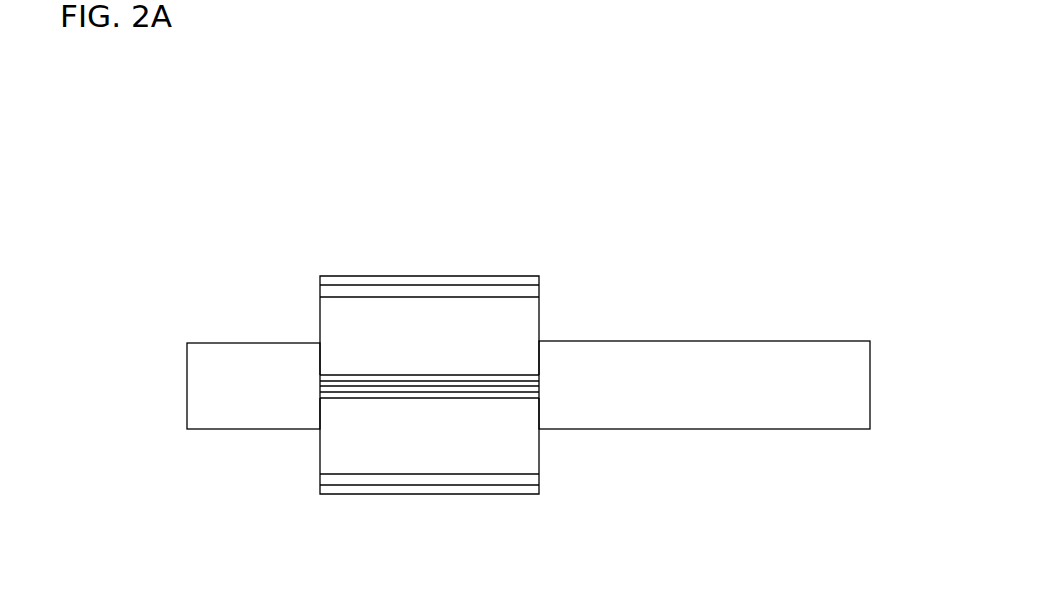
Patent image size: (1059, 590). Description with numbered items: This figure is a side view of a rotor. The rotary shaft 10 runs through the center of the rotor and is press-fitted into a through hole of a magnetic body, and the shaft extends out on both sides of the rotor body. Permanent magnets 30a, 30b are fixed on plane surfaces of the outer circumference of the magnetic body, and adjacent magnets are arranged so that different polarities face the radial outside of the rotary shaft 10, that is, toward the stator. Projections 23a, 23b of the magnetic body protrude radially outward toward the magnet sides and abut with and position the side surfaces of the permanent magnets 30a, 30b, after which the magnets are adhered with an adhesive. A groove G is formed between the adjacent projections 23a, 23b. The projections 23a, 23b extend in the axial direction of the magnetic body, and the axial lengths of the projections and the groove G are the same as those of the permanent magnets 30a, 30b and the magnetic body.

The rotary shaft 10 is at (755, 352).
The permanent magnet 30a is at (493, 342).
The permanent magnet 30b is at (503, 450).
The projection 23a is at (513, 375).
The projection 23b is at (529, 394).
The groove G is at (335, 380).